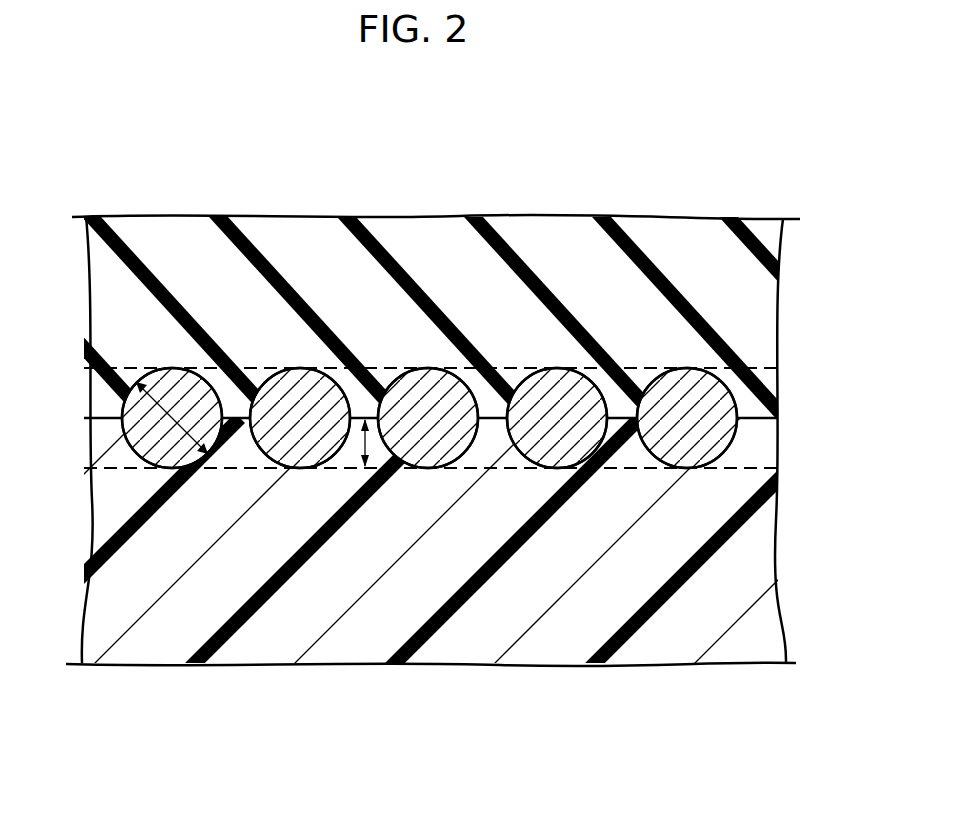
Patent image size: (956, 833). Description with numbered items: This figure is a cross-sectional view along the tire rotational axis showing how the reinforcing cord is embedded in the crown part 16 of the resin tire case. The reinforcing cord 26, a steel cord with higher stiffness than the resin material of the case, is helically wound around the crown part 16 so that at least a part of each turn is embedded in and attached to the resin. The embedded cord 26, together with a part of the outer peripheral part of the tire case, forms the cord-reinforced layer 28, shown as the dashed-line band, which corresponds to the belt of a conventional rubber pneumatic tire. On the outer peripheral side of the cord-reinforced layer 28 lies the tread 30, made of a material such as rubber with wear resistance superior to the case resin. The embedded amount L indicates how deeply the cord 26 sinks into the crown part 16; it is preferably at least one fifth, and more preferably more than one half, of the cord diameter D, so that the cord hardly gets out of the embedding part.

The crown part 16 is at (543, 647).
The reinforcing cord 26 is at (147, 370).
The cord-reinforced layer 28 is at (386, 360).
The tread 30 is at (662, 233).
The diameter of the reinforcing cord D is at (130, 443).
The embedded amount L is at (365, 440).